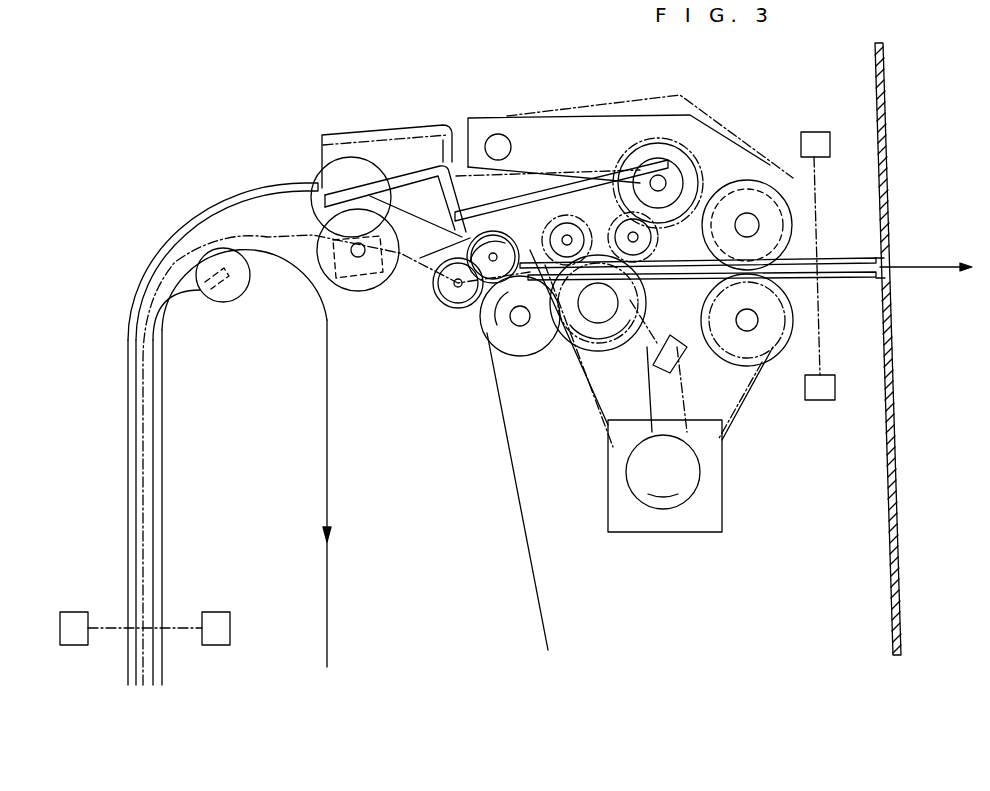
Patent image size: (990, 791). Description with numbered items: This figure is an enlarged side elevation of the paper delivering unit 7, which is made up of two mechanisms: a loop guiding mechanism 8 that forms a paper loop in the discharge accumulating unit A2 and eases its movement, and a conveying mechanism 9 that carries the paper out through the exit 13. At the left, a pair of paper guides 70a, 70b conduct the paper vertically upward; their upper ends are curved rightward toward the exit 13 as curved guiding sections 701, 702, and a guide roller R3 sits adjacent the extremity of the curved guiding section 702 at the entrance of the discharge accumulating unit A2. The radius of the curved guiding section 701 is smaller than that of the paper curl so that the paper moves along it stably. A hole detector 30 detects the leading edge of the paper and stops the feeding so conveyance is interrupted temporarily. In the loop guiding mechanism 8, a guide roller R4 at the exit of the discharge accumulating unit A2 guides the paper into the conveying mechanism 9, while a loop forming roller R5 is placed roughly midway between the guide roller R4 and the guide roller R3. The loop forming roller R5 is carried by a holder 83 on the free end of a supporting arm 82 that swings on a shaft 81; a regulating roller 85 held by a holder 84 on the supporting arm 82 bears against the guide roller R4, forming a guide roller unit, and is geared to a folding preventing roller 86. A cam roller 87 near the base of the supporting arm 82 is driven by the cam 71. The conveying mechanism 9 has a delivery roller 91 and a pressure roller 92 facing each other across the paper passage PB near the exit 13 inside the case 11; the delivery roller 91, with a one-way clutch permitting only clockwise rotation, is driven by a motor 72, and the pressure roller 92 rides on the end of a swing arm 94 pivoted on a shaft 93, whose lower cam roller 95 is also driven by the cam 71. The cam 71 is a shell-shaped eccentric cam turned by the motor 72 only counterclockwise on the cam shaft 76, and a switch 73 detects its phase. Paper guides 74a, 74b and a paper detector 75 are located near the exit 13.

The paper delivering unit 7 is at (358, 106).
The loop guiding mechanism 8 is at (453, 118).
The conveying mechanism 9 is at (810, 336).
The case 11 is at (887, 117).
The exit 13 is at (890, 257).
The hole detector 30 is at (75, 612).
The paper guide 70a is at (128, 462).
The paper guide 70b is at (163, 460).
The curved guiding section 701 is at (197, 222).
The curved guiding section 702 is at (197, 297).
The cam 71 is at (575, 363).
The motor 72 is at (718, 490).
The switch 73 is at (676, 365).
The paper guide 74a is at (850, 257).
The paper guide 74b is at (852, 278).
The paper detector 75 is at (813, 132).
The cam shaft 76 is at (598, 320).
The shaft 81 is at (662, 182).
The supporting arm 82 is at (528, 185).
The holder 83 is at (333, 218).
The holder 84 is at (428, 255).
The regulating roller 85 is at (493, 275).
The folding preventing roller 86 is at (442, 302).
The cam roller 87 is at (578, 224).
The delivery roller 91 is at (775, 352).
The pressure roller 92 is at (787, 212).
The shaft 93 is at (498, 134).
The swing arm 94 is at (703, 113).
The cam roller 95 is at (630, 218).
The discharge accumulating unit A2 is at (445, 629).
The paper passage PB is at (143, 505).
The guide roller R3 is at (243, 287).
The guide roller R4 is at (520, 356).
The loop forming roller R5 is at (362, 291).